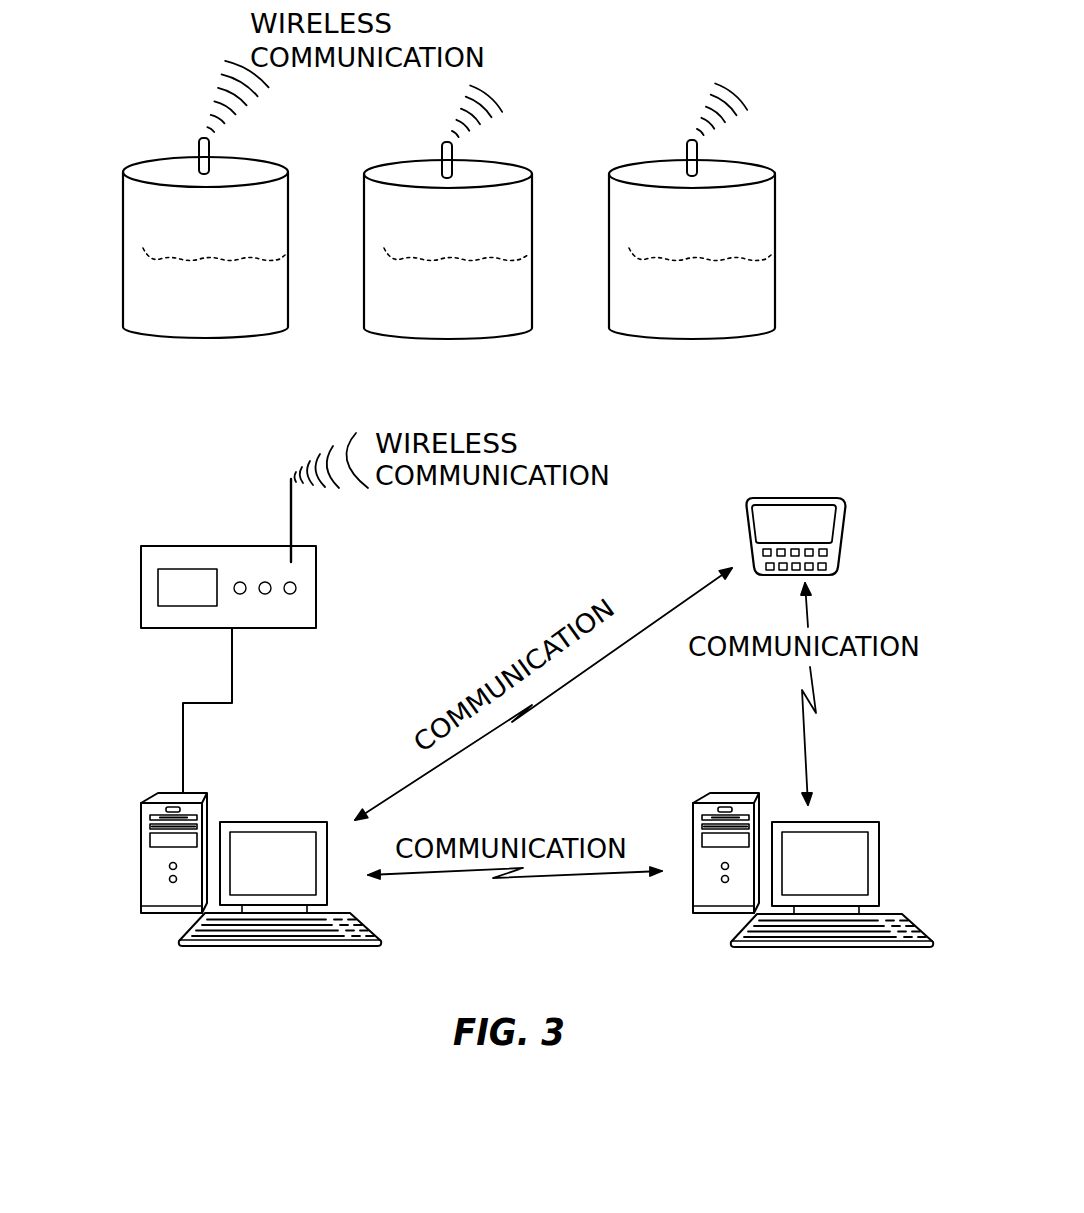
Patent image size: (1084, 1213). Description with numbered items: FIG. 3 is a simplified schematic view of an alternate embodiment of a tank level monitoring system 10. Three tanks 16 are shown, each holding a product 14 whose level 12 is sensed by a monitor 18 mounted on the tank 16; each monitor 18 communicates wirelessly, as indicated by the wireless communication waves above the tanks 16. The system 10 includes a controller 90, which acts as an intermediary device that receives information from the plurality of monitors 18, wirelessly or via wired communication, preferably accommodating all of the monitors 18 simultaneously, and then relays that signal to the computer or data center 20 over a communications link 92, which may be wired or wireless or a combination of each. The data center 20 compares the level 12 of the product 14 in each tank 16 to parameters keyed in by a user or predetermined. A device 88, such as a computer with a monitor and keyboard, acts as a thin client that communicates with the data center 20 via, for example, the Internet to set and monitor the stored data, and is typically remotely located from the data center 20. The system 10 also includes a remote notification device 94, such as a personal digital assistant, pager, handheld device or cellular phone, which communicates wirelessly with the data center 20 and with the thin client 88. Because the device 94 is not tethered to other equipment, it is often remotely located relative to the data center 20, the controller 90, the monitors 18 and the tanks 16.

The system 10 is at (862, 418).
The level 12 is at (143, 248).
The product 14 is at (148, 297).
The tank 16 is at (288, 207).
The monitor 18 is at (198, 145).
The computer or data center 20 is at (141, 840).
The device 88 is at (877, 852).
The controller 90 is at (140, 582).
The communications link 92 is at (182, 723).
The remote notification device 94 is at (845, 523).